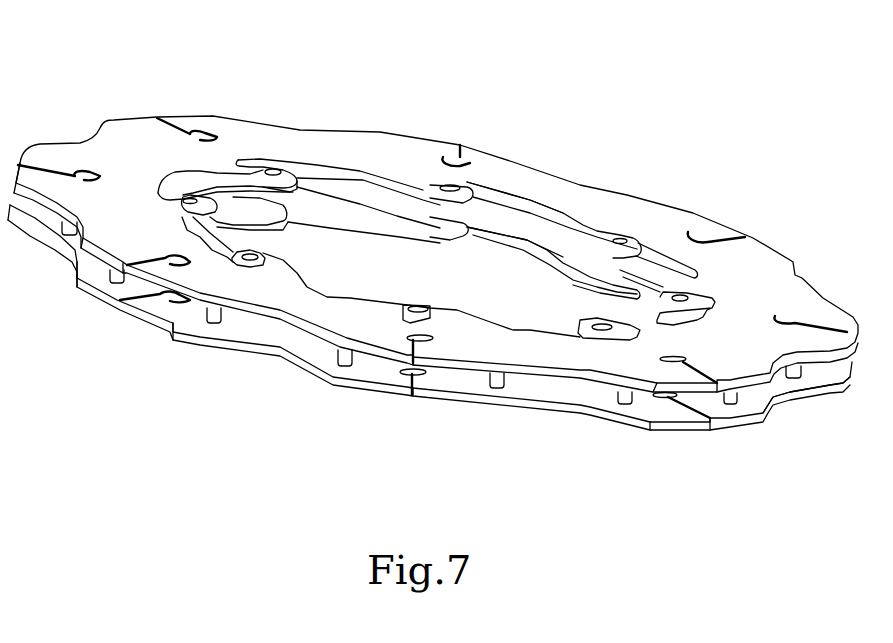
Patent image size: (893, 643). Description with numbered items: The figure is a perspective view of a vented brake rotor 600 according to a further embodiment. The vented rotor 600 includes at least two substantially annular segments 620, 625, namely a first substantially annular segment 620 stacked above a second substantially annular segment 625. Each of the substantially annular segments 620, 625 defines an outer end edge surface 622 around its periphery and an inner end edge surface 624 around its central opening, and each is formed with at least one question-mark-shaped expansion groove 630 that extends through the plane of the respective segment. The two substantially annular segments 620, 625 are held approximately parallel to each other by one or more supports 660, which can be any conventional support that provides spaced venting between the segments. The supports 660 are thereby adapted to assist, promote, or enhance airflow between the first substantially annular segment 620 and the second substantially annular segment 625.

The vented rotor 600 is at (583, 88).
The first substantially annular segment 620 is at (763, 260).
The outer end edge surface 622 is at (373, 352).
The inner end edge surface 624 is at (527, 203).
The second substantially annular segment 625 is at (813, 380).
The question-mark-shaped expansion groove 630 is at (420, 388).
The supports 660 is at (207, 318).